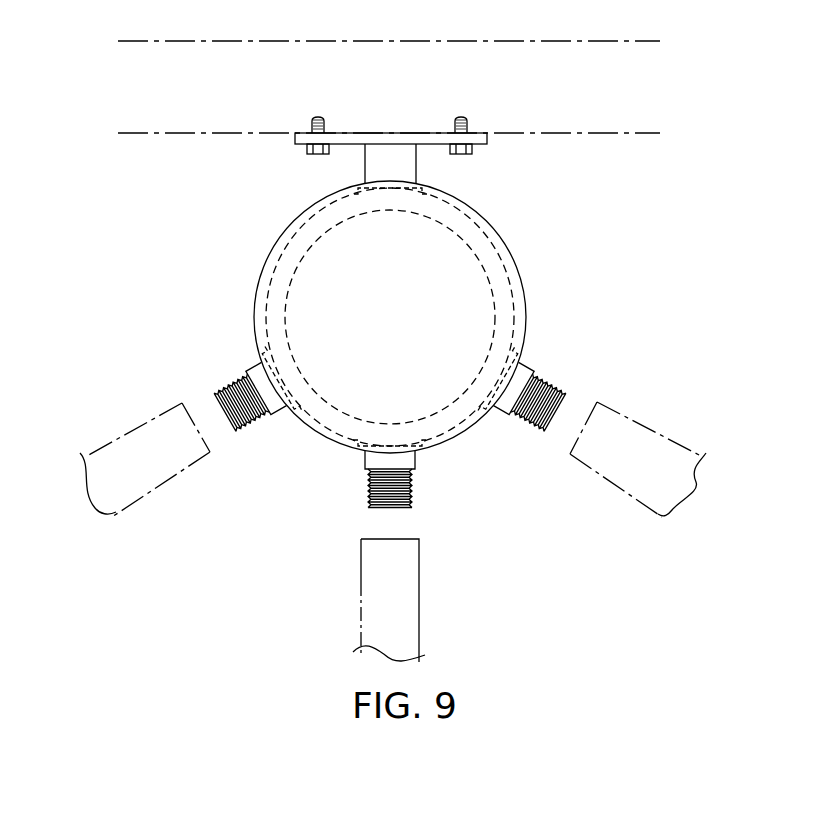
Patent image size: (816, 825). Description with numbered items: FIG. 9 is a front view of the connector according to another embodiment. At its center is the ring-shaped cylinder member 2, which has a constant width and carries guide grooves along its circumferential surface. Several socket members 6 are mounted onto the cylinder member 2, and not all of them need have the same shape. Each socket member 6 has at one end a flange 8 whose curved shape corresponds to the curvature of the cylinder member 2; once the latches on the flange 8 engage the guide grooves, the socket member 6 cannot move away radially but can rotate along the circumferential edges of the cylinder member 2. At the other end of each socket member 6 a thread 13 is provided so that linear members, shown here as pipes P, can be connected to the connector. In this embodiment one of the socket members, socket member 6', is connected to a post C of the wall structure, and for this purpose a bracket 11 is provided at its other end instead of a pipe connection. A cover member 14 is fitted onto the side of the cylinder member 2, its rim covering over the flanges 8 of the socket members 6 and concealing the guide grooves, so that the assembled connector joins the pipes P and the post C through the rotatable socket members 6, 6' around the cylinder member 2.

The cylinder member 2 is at (484, 242).
The socket member 6 is at (411, 418).
The socket member 6' is at (349, 169).
The flange 8 is at (487, 412).
The bracket 11 is at (488, 141).
The thread 13 is at (523, 422).
The cover member 14 is at (527, 294).
The pipe P is at (652, 432).
The post C is at (221, 134).